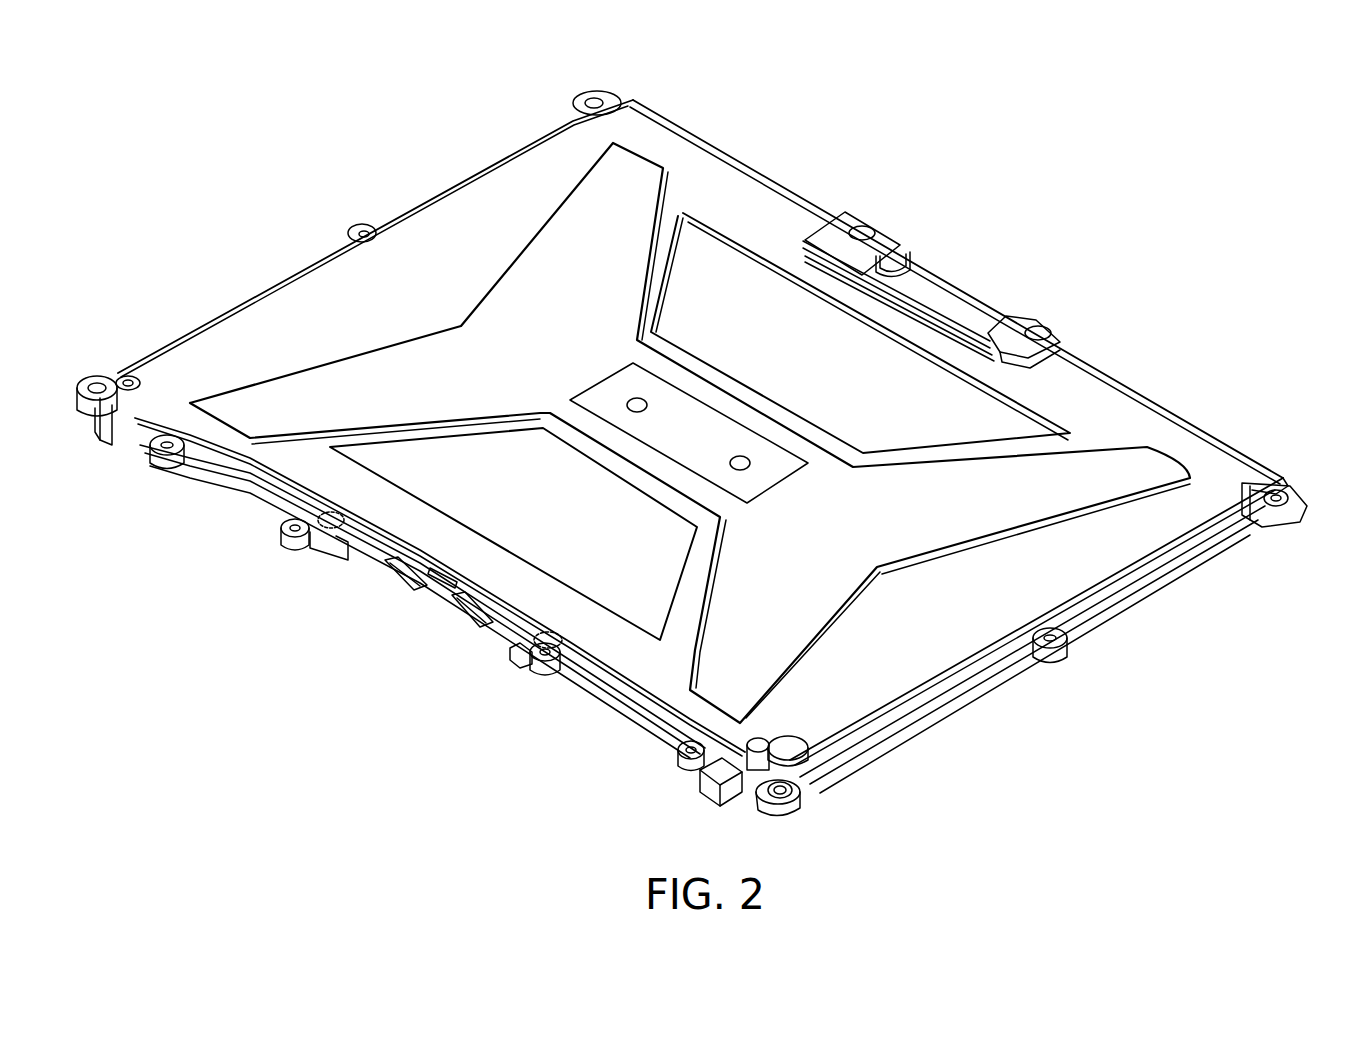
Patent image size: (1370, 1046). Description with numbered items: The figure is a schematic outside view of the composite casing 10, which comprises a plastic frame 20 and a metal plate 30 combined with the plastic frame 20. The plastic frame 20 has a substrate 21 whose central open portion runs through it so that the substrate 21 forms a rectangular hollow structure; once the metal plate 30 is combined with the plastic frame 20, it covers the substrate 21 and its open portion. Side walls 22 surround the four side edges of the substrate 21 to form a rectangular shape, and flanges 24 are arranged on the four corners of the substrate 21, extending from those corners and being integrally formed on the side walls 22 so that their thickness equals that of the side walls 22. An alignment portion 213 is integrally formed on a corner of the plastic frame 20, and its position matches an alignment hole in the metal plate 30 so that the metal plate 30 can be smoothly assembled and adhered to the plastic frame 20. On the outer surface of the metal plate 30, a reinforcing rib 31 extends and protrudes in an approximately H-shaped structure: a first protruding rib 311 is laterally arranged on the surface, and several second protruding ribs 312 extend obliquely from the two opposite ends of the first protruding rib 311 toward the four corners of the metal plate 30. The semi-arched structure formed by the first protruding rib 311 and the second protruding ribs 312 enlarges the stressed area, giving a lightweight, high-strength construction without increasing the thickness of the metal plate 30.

The composite casing 10 is at (204, 220).
The plastic frame 20 is at (222, 485).
The substrate 21 is at (612, 692).
The side walls 22 is at (655, 722).
The flanges 24 is at (590, 103).
The alignment portion 213 is at (132, 378).
The metal plate 30 is at (1186, 390).
The reinforcing rib 31 is at (482, 288).
The first protruding rib 311 is at (732, 400).
The second protruding ribs 312 is at (648, 160).